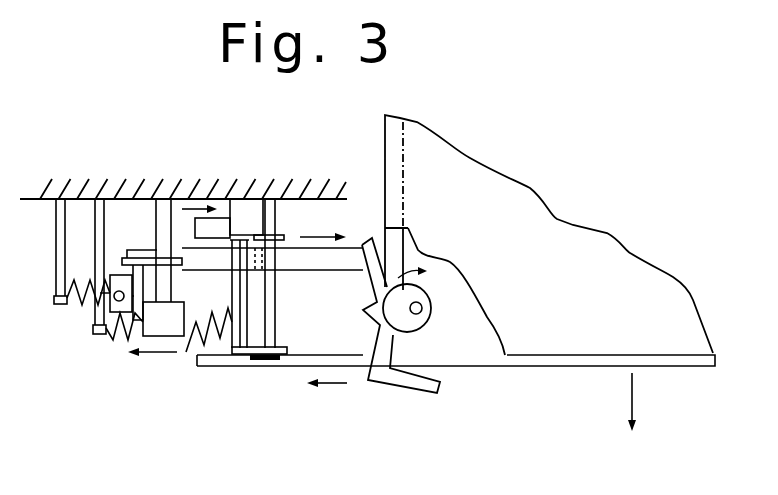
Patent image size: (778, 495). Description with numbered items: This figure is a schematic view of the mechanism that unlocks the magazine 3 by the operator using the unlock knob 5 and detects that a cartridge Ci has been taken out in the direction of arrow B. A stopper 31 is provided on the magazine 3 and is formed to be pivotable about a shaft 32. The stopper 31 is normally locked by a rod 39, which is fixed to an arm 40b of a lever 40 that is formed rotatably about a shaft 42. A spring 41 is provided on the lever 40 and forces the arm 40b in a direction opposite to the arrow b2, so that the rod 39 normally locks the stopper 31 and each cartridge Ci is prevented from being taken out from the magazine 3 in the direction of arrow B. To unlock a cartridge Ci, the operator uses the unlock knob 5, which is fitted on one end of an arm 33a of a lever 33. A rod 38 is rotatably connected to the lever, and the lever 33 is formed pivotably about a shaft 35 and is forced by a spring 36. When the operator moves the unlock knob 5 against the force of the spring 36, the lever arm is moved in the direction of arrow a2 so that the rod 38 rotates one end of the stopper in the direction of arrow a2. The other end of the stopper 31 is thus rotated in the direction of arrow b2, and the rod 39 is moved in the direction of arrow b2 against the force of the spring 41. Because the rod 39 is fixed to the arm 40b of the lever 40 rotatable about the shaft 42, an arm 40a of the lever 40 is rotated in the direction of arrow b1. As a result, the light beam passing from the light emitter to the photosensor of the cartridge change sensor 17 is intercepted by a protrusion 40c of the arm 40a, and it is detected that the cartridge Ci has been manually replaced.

The magazine 3 is at (520, 207).
The unlock knob 5 is at (157, 318).
The cartridge change sensor 17 is at (252, 210).
The stopper 31 is at (410, 384).
The shaft 32 is at (422, 320).
The lever 33 is at (123, 272).
The arm 33a is at (158, 250).
The shaft 35 is at (172, 281).
The spring 36 is at (78, 300).
The rod 38 is at (196, 247).
The rod 39 is at (290, 366).
The lever 40 is at (217, 342).
The arm 40a is at (282, 233).
The arm 40b is at (242, 362).
The protrusion 40c is at (217, 225).
The spring 41 is at (199, 347).
The shaft 42 is at (277, 313).
The arrow a2 is at (237, 295).
The arrow b1 is at (187, 199).
The arrow b2 is at (331, 395).
The arrow B is at (634, 400).
The cartridge Ci is at (563, 366).